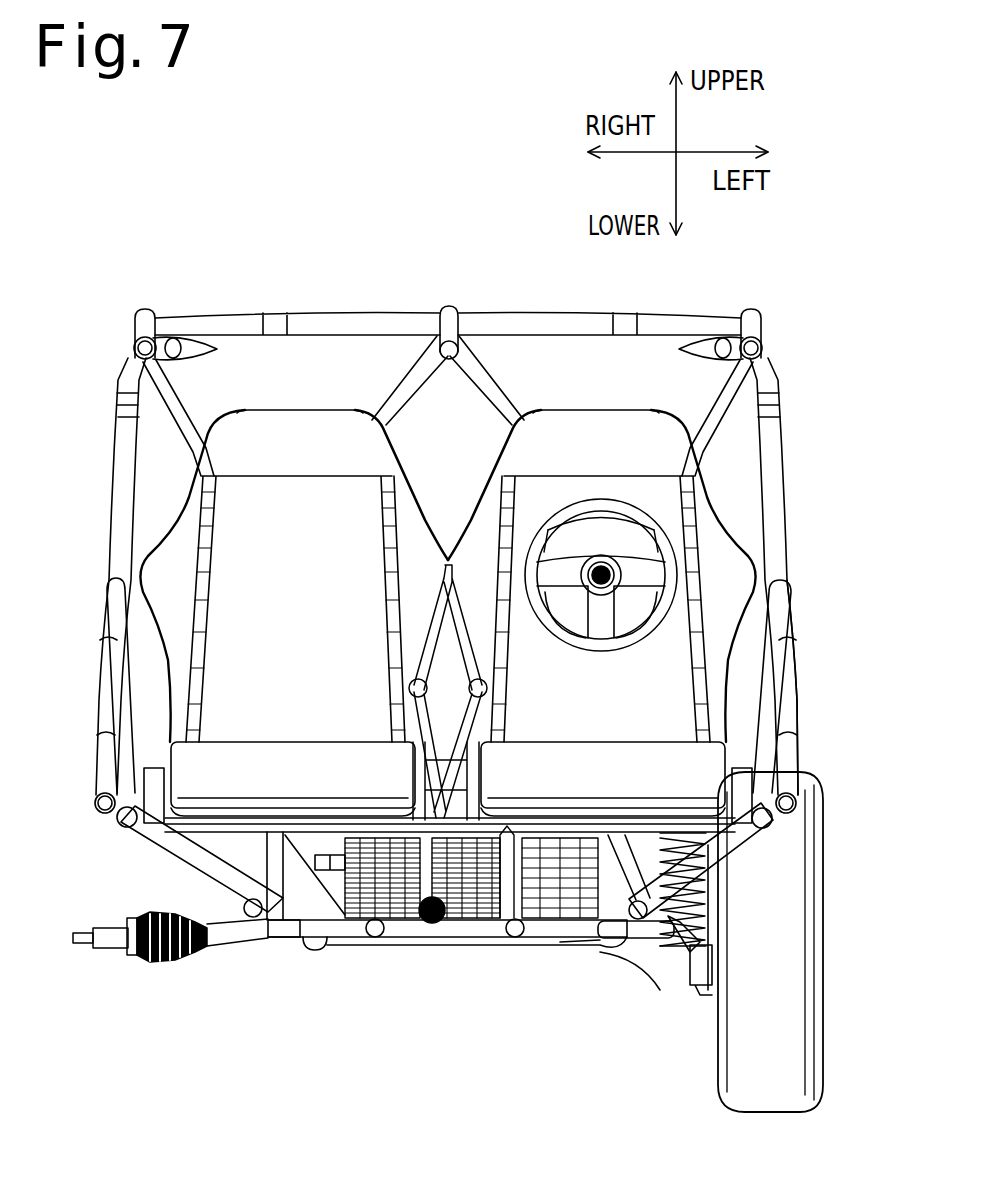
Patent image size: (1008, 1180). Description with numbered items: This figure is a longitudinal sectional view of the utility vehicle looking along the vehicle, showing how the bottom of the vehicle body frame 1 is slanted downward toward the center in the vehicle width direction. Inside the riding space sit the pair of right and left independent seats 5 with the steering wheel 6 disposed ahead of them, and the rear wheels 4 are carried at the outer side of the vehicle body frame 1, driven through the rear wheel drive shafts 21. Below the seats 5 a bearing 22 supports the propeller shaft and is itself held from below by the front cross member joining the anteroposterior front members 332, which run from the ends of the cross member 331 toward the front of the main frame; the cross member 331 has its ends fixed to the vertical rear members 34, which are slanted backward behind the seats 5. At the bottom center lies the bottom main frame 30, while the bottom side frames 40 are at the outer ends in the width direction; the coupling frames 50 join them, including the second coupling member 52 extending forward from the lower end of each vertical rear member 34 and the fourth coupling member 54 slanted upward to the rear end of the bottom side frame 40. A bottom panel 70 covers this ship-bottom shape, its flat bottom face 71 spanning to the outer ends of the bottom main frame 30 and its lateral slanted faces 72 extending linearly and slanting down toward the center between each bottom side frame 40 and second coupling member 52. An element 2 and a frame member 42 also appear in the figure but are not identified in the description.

The vehicle body frame 1 is at (320, 948).
The roll cage 2 is at (141, 312).
The rear wheels 4 is at (722, 1047).
The seats 5 is at (300, 462).
The steering wheel 6 is at (545, 632).
The rear wheel drive shafts 21 is at (218, 940).
The bearing 22 is at (427, 927).
The bottom main frame 30 is at (600, 937).
The vertical rear members 34 is at (268, 855).
The bottom side frames 40 is at (104, 817).
The rear pillar of roll cage 42 is at (795, 688).
The coupling frames 50 is at (200, 863).
The second coupling member 52 is at (640, 945).
The fourth coupling member 54 is at (717, 870).
The bottom panel 70 is at (686, 931).
The bottom face 71 is at (587, 940).
The lateral slanted faces 72 is at (708, 850).
The cross member 331 is at (292, 930).
The anteroposterior front members 332 is at (353, 937).